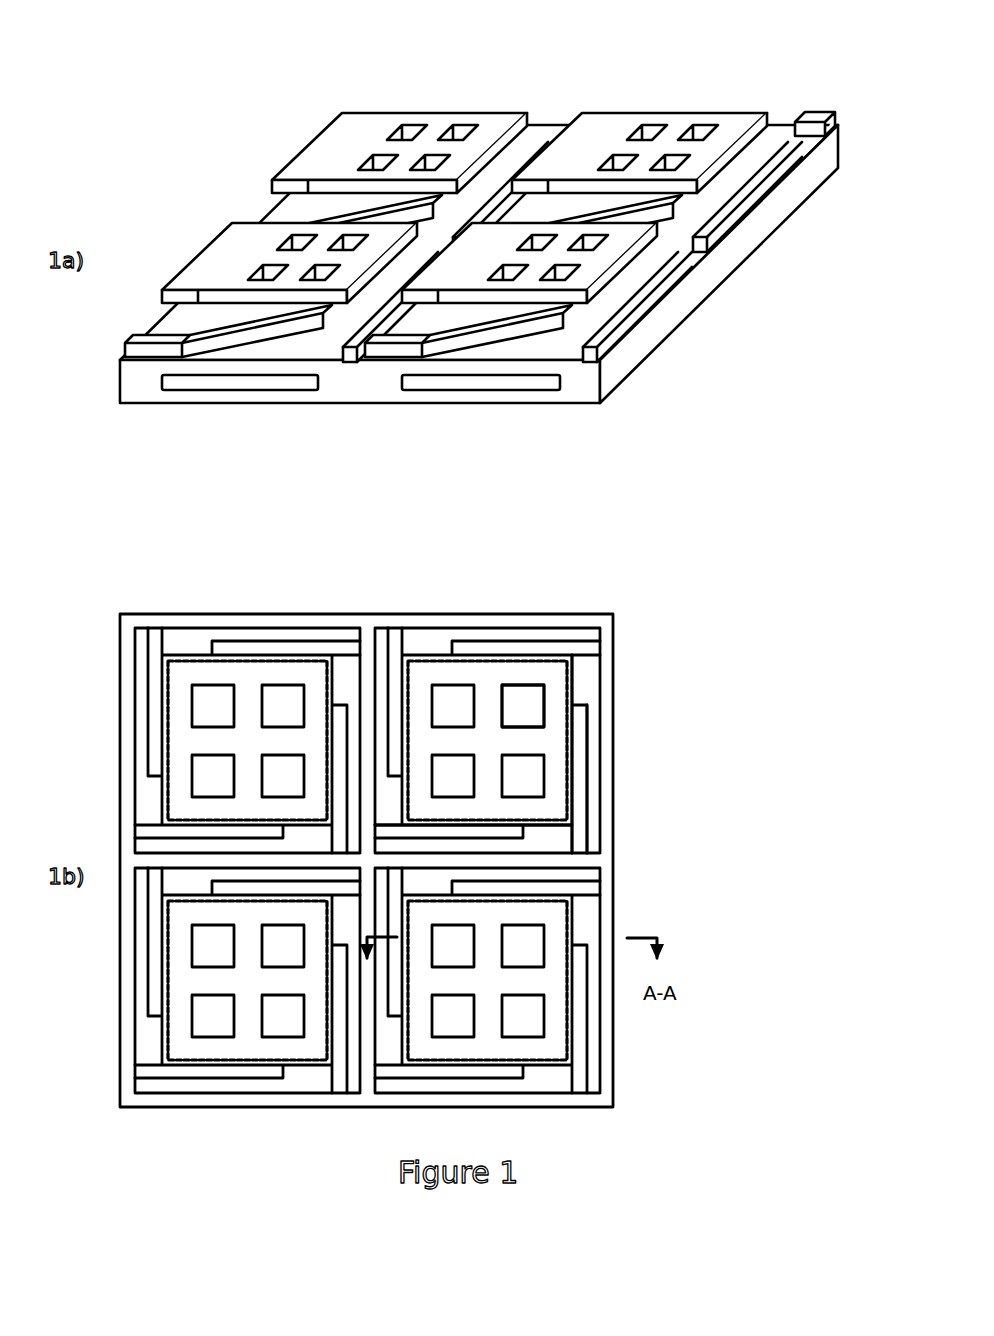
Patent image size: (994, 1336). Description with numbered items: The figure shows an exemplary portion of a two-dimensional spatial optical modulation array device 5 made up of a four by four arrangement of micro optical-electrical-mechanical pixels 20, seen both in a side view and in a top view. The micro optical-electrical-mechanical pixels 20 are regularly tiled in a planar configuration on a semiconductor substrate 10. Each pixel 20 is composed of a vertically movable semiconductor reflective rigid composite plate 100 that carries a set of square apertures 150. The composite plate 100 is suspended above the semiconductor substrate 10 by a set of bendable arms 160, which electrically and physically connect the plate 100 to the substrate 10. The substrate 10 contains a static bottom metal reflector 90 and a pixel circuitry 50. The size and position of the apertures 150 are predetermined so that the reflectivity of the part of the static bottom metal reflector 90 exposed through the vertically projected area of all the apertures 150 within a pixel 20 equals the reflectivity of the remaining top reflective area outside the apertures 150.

The spatial optical modulation array device 5 is at (234, 112).
The semiconductor substrate 10 is at (643, 363).
The micro optical-electrical-mechanical pixel 20 is at (590, 85).
The pixel circuitry 50 is at (476, 390).
The static bottom metal reflector 90 is at (728, 222).
The semiconductor reflective rigid composite plate 100 is at (743, 115).
The apertures 150 is at (705, 108).
The bendable arms 160 is at (757, 128).